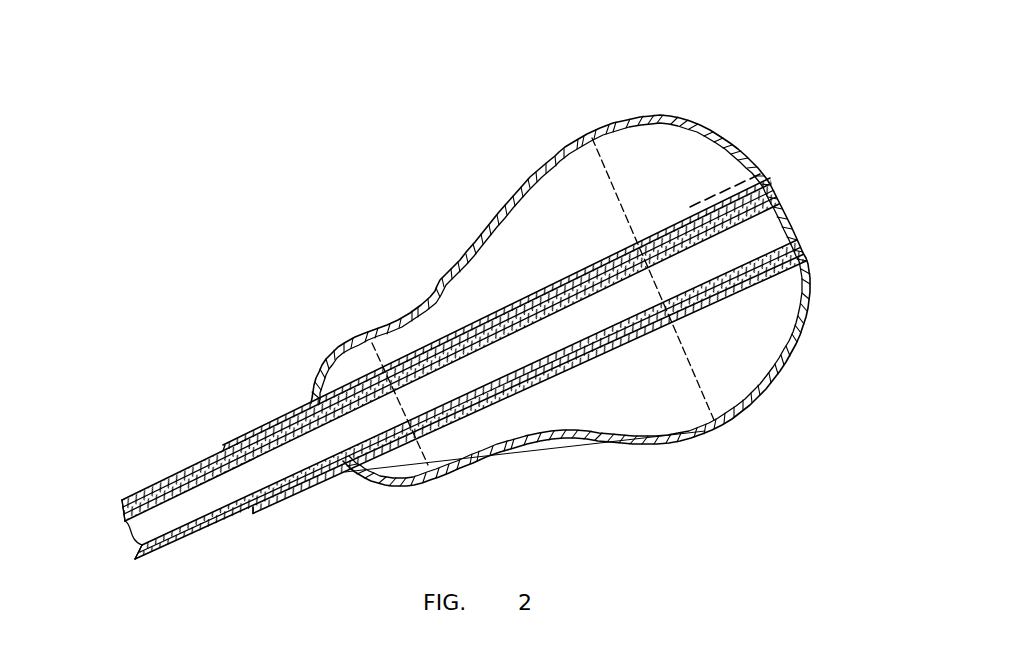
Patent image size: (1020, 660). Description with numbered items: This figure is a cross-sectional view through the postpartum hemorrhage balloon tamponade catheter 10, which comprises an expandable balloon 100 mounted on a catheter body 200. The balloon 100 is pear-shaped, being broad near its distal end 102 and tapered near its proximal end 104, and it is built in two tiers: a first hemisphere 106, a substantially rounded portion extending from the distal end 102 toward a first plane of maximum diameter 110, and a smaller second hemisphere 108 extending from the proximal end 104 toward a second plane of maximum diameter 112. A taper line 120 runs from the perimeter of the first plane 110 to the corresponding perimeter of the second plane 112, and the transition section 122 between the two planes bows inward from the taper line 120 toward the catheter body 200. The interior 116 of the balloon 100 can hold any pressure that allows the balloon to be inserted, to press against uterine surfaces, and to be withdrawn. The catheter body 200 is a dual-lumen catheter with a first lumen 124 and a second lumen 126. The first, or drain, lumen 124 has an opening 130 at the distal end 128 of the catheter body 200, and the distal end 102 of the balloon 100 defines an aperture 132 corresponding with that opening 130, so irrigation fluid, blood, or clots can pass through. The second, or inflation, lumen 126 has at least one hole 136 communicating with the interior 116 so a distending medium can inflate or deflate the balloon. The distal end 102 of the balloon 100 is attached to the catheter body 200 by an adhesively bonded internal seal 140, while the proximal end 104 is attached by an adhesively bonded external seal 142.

The balloon tamponade catheter 10 is at (160, 440).
The expandable balloon 100 is at (490, 209).
The distal end of the balloon 102 is at (777, 174).
The proximal end of the balloon 104 is at (303, 398).
The first hemisphere 106 is at (793, 363).
The second hemisphere 108 is at (405, 484).
The first plane of maximum diameter 110 is at (607, 167).
The second plane of maximum diameter 112 is at (379, 350).
The interior of the balloon 116 is at (677, 153).
The taper line 120 is at (543, 460).
The transition section 122 is at (450, 507).
The first lumen 124 is at (128, 538).
The second lumen 126 is at (115, 515).
The distal end of the catheter body 128 is at (778, 190).
The opening 130 is at (758, 233).
The aperture 132 is at (801, 233).
The hole 136 is at (659, 241).
The internal seal 140 is at (722, 200).
The external seal 142 is at (306, 492).
The catheter body 200 is at (200, 532).